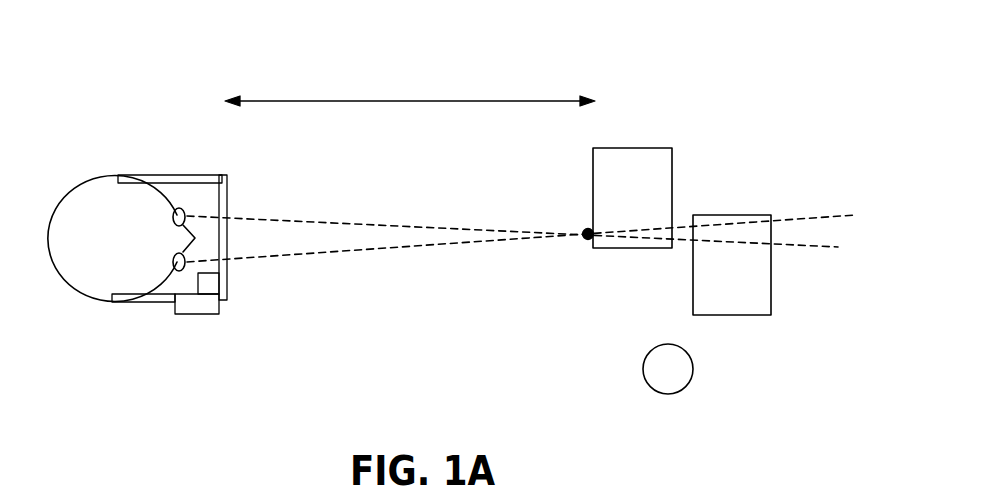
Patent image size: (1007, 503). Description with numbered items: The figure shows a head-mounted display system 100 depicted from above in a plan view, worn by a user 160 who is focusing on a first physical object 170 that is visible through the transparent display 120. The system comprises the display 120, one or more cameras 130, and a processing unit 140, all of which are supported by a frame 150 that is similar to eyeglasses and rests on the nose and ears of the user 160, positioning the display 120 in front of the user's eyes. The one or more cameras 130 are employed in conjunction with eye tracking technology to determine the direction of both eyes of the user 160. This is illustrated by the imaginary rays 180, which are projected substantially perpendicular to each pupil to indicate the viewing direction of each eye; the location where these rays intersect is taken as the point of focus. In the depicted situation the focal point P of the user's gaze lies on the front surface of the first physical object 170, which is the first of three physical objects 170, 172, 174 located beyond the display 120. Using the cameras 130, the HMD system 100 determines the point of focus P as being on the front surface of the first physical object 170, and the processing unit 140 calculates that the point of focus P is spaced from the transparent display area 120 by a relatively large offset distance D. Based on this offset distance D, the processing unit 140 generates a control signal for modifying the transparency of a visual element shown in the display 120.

The HMD system 100 is at (203, 68).
The display 120 is at (226, 193).
The cameras 130 is at (209, 278).
The processing unit 140 is at (185, 315).
The frame 150 is at (165, 178).
The user 160 is at (93, 195).
The first physical object 170 is at (628, 177).
The second physical object 172 is at (712, 215).
The third physical object 174 is at (662, 371).
The imaginary rays 180 is at (263, 217).
The offset distance D is at (410, 79).
The focal point P is at (585, 241).